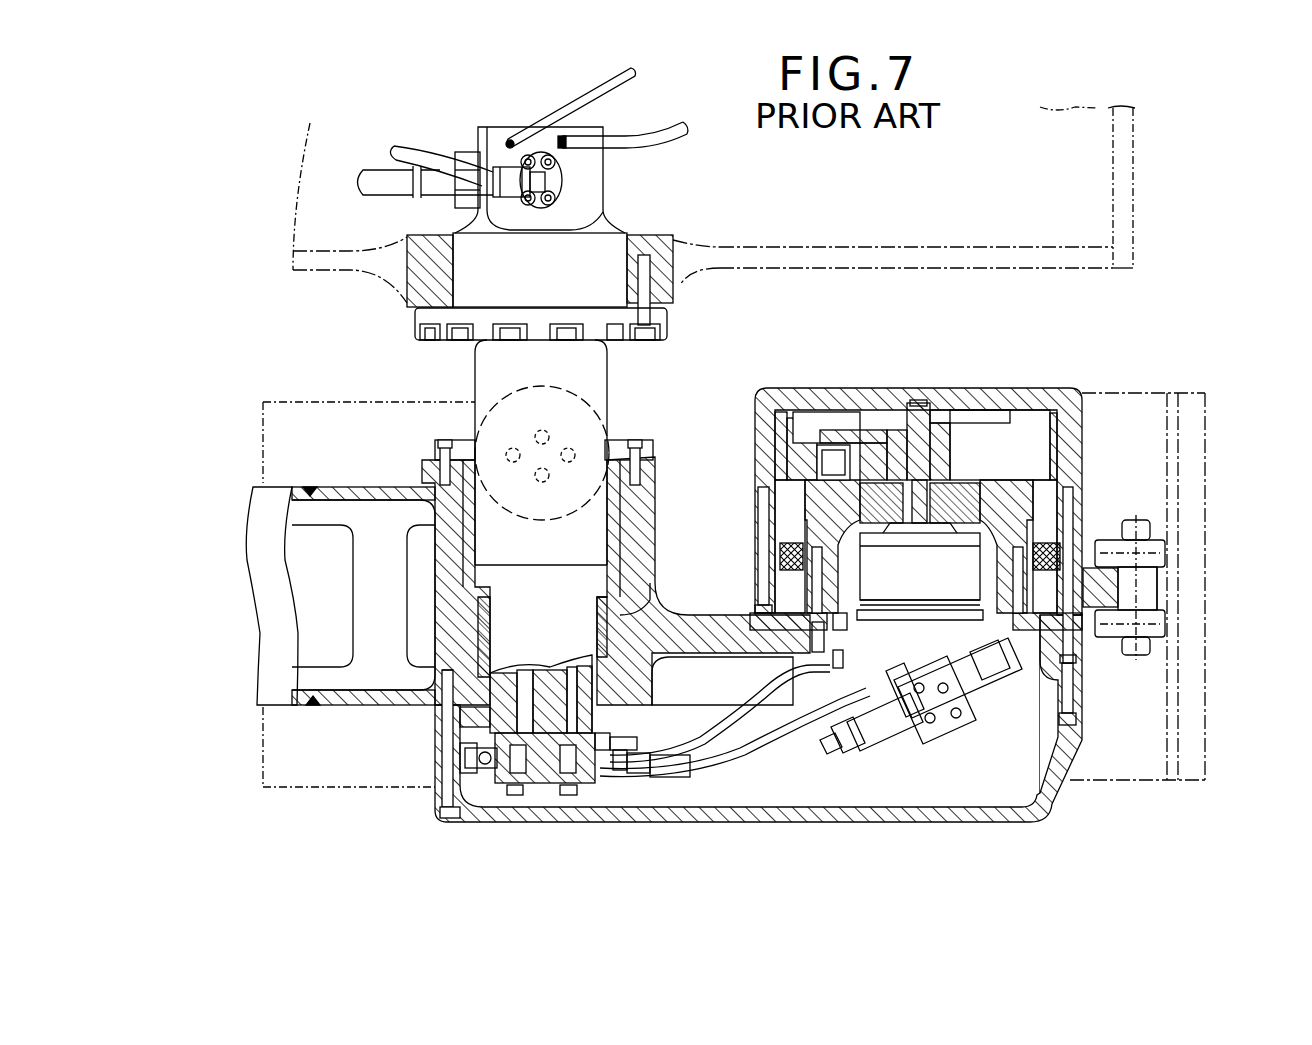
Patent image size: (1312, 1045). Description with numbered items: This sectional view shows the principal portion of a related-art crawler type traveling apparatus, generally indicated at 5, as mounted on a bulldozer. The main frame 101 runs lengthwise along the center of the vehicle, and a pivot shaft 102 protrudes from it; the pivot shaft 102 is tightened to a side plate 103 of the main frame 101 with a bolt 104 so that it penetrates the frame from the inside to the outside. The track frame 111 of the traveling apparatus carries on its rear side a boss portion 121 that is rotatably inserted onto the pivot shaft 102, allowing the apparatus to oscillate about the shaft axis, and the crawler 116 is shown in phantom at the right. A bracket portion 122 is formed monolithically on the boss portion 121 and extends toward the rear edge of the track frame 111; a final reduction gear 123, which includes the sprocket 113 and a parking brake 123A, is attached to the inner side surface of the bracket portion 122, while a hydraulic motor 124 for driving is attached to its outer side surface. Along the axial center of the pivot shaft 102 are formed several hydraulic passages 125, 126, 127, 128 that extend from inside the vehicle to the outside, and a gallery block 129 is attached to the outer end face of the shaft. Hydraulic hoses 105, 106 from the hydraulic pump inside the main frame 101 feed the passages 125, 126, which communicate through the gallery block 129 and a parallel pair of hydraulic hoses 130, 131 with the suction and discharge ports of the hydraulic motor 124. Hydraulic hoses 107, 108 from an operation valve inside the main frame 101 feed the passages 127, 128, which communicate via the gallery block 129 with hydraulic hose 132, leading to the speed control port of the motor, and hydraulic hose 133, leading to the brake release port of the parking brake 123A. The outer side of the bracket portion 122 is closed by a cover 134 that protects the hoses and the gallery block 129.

The electric motor assembly 5 is at (926, 828).
The main frame 101 is at (1062, 107).
The pivot shaft 102 is at (600, 240).
The side plate 103 is at (918, 245).
The bolt 104 is at (673, 330).
The hydraulic hose 105 is at (398, 143).
The hydraulic hose 106 is at (363, 172).
The hydraulic hose 107 is at (568, 103).
The hydraulic hose 108 is at (650, 135).
The track frame 111 is at (262, 683).
The sprocket 113 is at (1123, 567).
The crawler 116 is at (1133, 760).
The boss portion 121 is at (448, 620).
The bracket portion 122 is at (690, 635).
The final reduction gear 123 is at (1066, 388).
The parking brake 123A is at (950, 470).
The hydraulic motor 124 is at (1048, 790).
The hydraulic passage 125 is at (542, 427).
The hydraulic passage 126 is at (542, 468).
The hydraulic passage 127 is at (568, 450).
The hydraulic passage 128 is at (513, 448).
The gallery block 129 is at (490, 770).
The hydraulic hose 130 is at (715, 770).
The hydraulic hose 131 is at (871, 723).
The hydraulic hose 132 is at (762, 735).
The hydraulic hose 133 is at (783, 672).
The cover 134 is at (975, 825).